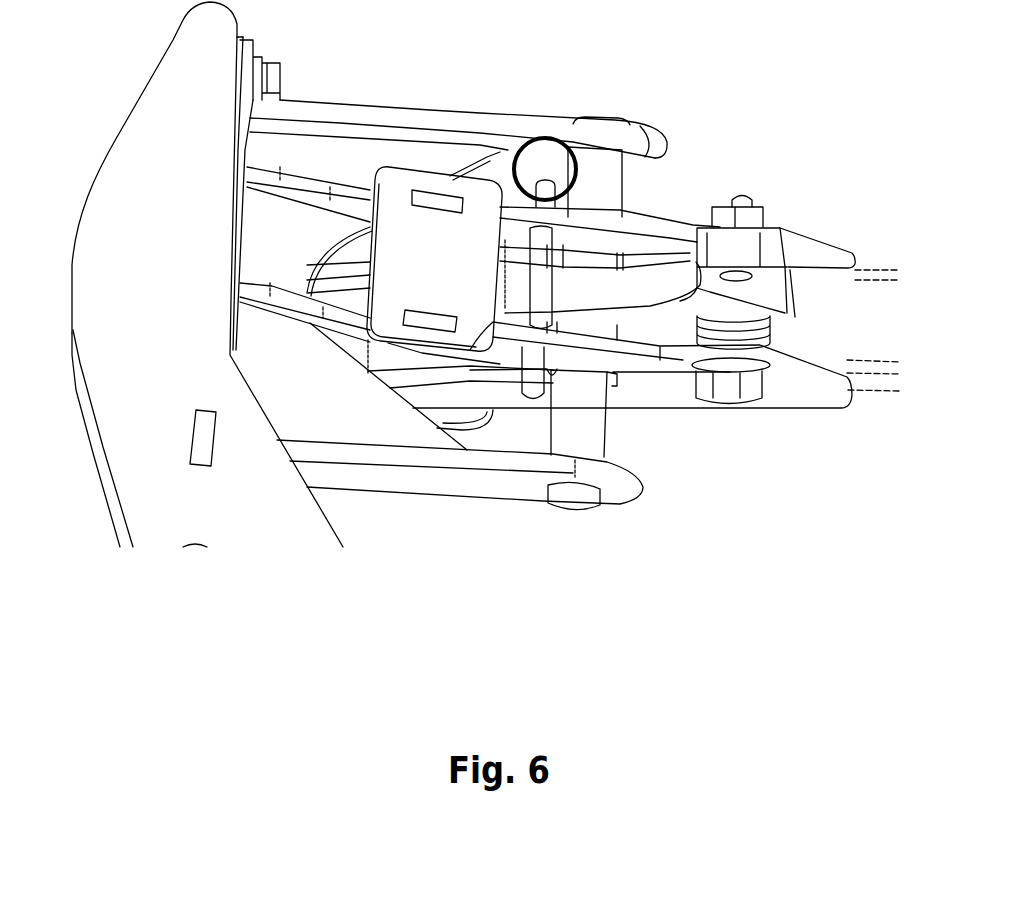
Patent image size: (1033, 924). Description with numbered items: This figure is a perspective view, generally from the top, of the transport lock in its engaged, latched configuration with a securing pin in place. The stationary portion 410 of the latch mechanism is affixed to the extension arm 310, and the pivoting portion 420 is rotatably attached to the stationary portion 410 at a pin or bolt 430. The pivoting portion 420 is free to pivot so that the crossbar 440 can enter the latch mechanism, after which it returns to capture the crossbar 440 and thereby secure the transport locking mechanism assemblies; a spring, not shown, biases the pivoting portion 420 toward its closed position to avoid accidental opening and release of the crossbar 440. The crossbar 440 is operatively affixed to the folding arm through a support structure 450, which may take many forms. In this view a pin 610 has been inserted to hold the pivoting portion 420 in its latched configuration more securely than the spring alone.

The extension arm 310 is at (850, 334).
The stationary portion 410 is at (669, 390).
The pivoting portion 420 is at (760, 253).
The pin or bolt 430 is at (730, 390).
The crossbar 440 is at (597, 423).
The support structure 450 is at (487, 489).
The pin 610 is at (540, 279).